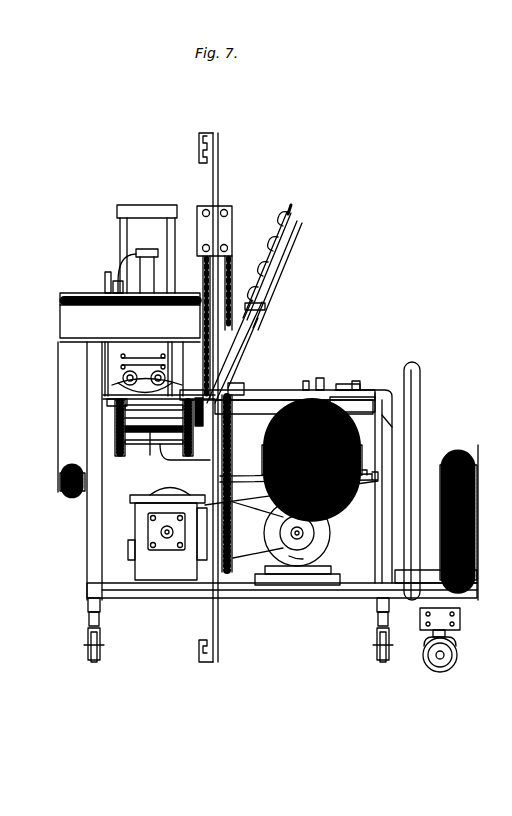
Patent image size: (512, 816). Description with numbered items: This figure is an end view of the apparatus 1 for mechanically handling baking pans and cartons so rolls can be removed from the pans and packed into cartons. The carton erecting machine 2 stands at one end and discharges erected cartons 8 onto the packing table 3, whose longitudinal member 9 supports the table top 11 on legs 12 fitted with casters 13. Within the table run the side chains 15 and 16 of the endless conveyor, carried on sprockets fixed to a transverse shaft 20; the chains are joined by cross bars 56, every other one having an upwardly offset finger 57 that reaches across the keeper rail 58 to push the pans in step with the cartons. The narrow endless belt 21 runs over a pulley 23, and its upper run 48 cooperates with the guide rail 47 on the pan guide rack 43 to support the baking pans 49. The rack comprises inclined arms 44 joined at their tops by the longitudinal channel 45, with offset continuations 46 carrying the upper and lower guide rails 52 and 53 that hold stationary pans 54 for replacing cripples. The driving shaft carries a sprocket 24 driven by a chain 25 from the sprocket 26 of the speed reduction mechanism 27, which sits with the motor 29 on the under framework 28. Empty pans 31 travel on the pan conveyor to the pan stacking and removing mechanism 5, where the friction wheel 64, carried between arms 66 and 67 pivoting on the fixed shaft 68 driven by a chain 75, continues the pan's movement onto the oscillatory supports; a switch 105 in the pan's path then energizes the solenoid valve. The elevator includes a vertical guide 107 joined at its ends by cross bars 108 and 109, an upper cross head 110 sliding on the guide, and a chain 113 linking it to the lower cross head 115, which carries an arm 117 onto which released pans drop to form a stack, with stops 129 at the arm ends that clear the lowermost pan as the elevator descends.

The apparatus 1 is at (86, 495).
The carton erecting machine 2 is at (117, 207).
The packing table 3 is at (103, 397).
The pan stacking and removing mechanism 5 is at (388, 392).
The cartons 8 is at (110, 402).
The longitudinal member 9 is at (117, 410).
The table top 11 is at (120, 428).
The legs 12 is at (87, 552).
The casters 13 is at (88, 634).
The side chain 15 is at (62, 479).
The side chain 16 is at (190, 460).
The transverse shaft 20 is at (150, 452).
The endless belt 21 is at (255, 395).
The pulley 23 is at (262, 456).
The sprocket 24 is at (230, 413).
The chain 25 is at (233, 484).
The sprocket 26 is at (233, 568).
The speed reduction mechanism 27 is at (138, 525).
The under framework 28 is at (176, 592).
The motor 29 is at (322, 514).
The empty pans 31 is at (362, 458).
The pan guide rack 43 is at (252, 332).
The arms 44 is at (240, 380).
The longitudinal channel 45 is at (266, 306).
The offset continuations 46 is at (303, 226).
The guide rail 47 is at (237, 360).
The upper run 48 is at (197, 412).
The baking pans 49 is at (205, 328).
The upper longitudinal guide rail 52 is at (291, 208).
The lower longitudinal guide rail 53 is at (270, 268).
The stationary pans 54 is at (280, 245).
The cross bars 56 is at (118, 386).
The finger 57 is at (168, 374).
The keeper rail 58 is at (236, 384).
The friction wheel 64 is at (322, 379).
The arm 66 is at (355, 381).
The arm 67 is at (307, 381).
The fixed shaft 68 is at (290, 390).
The chain 75 is at (262, 407).
The switch 105 is at (352, 384).
The vertical guide 107 is at (219, 188).
The cross bar 108 is at (199, 135).
The cross bar 109 is at (200, 662).
The upper cross head 110 is at (232, 224).
The chain 113 is at (233, 262).
The lower cross head 115 is at (190, 490).
The arm 117 is at (345, 487).
The stops 129 is at (440, 468).